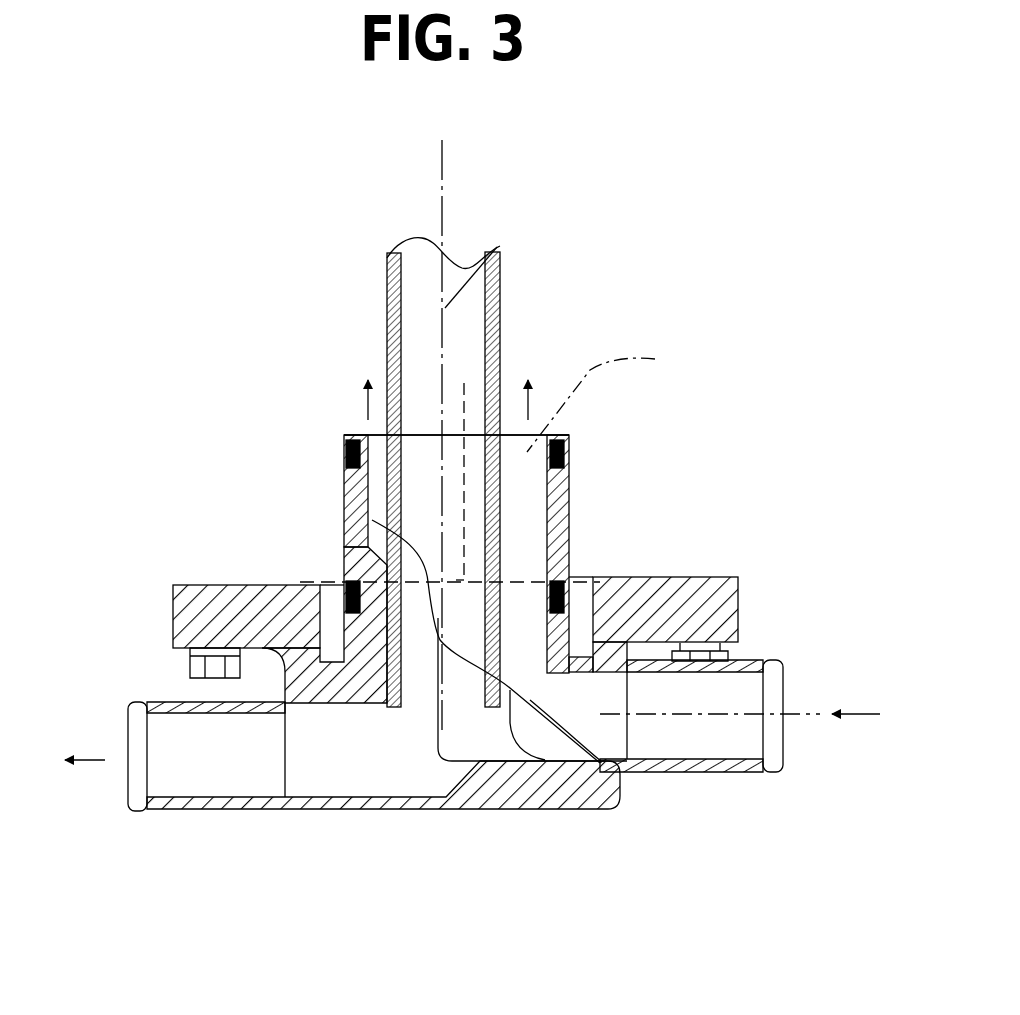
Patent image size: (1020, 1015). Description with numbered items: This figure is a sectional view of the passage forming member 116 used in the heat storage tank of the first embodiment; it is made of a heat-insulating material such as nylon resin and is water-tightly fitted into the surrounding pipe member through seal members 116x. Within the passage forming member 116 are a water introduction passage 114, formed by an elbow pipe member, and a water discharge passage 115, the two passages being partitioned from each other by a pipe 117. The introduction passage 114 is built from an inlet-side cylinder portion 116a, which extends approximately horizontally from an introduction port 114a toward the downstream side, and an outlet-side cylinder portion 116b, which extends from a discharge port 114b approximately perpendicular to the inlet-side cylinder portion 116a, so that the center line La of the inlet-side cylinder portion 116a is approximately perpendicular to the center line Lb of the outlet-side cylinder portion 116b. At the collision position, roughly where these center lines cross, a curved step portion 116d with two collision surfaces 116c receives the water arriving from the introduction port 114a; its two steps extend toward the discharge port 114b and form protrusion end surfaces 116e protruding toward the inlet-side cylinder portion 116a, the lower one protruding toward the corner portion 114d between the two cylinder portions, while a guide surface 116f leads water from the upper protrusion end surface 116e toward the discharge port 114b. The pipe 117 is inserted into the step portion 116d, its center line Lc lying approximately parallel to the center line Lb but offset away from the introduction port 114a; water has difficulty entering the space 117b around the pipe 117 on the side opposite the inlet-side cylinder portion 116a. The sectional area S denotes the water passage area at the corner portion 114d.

The water introduction passage 114 is at (520, 512).
The introduction port 114a is at (775, 740).
The discharge port 114b is at (503, 428).
The corner portion 114d is at (580, 693).
The water discharge passage 115 is at (422, 690).
The passage forming member 116 is at (530, 814).
The inlet-side cylinder portion 116a is at (733, 766).
The outlet-side cylinder portion 116b is at (556, 542).
The collision surface 116c is at (438, 618).
The step portion 116d is at (527, 740).
The protrusion end surface 116e is at (372, 520).
The guide surface 116f is at (382, 547).
The seal member 116x is at (345, 456).
The pipe 117 is at (500, 322).
The space 117b is at (380, 460).
The center line of the inlet-side cylinder portion La is at (795, 680).
The center line of the outlet-side cylinder portion Lb is at (614, 395).
The center line of the pipe Lc is at (500, 262).
The sectional area of the water passage S is at (530, 673).